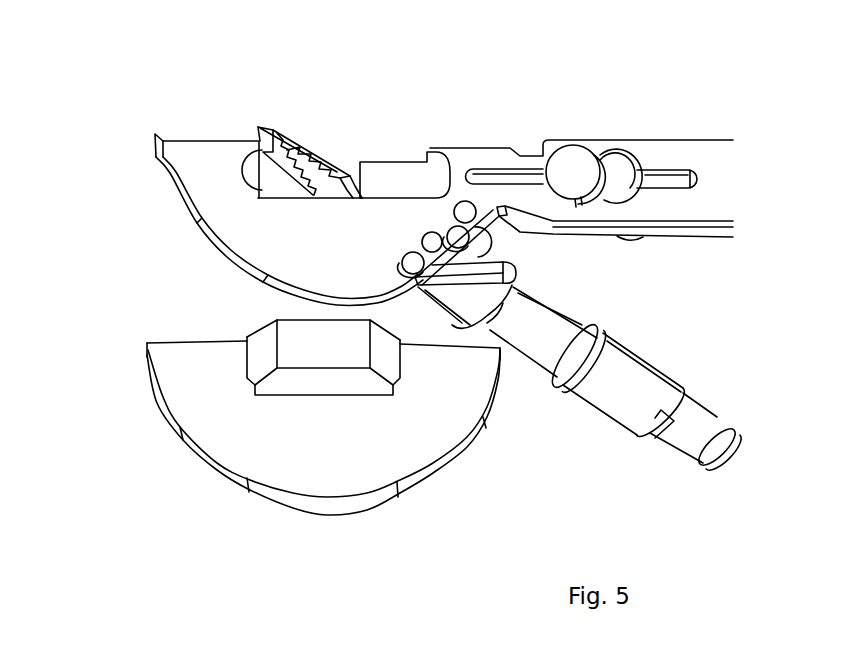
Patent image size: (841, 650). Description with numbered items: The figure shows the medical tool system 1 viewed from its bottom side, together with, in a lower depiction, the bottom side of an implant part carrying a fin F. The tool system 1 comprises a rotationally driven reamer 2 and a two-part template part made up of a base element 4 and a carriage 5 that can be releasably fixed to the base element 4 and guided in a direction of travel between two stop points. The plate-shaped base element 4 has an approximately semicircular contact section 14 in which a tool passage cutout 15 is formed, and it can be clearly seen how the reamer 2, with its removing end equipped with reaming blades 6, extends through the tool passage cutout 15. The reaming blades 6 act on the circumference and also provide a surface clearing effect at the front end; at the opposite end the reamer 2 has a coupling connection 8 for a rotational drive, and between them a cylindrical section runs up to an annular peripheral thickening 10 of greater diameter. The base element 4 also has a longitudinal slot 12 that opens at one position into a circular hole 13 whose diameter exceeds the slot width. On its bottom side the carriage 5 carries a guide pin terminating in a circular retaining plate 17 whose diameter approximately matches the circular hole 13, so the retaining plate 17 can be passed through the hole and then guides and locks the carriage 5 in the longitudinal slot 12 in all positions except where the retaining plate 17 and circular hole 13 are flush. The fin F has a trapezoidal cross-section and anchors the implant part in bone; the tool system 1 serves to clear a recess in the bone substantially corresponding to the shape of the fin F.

The tool system 1 is at (137, 503).
The reamer 2 is at (572, 316).
The base element 4 is at (183, 236).
The carriage 5 is at (386, 173).
The reaming blades 6 is at (288, 134).
The coupling connection 8 is at (668, 447).
The annular peripheral thickening 10 is at (517, 277).
The longitudinal slot 12 is at (500, 177).
The circular hole 13 is at (618, 170).
The contact section 14 is at (203, 158).
The tool passage cutout 15 is at (420, 178).
The retaining plate 17 is at (577, 162).
The fin F is at (289, 335).